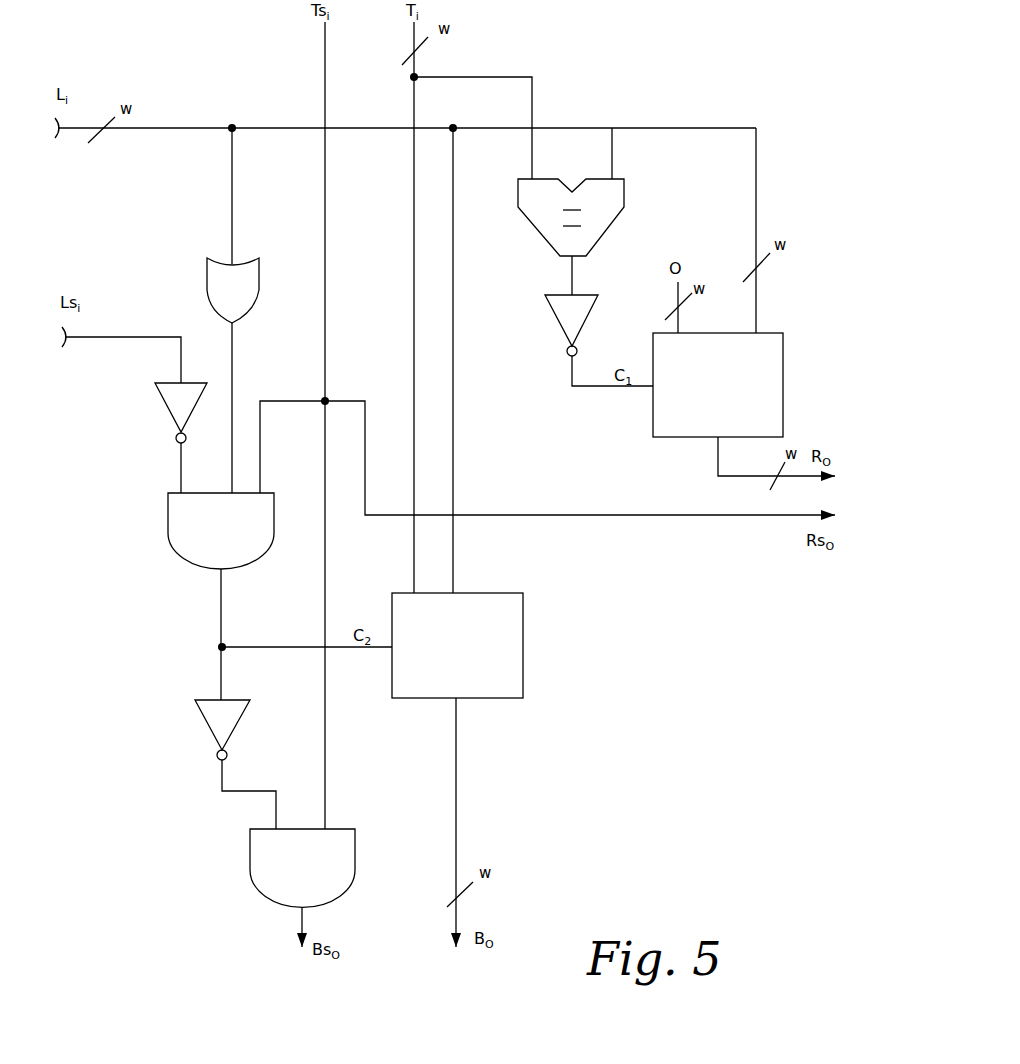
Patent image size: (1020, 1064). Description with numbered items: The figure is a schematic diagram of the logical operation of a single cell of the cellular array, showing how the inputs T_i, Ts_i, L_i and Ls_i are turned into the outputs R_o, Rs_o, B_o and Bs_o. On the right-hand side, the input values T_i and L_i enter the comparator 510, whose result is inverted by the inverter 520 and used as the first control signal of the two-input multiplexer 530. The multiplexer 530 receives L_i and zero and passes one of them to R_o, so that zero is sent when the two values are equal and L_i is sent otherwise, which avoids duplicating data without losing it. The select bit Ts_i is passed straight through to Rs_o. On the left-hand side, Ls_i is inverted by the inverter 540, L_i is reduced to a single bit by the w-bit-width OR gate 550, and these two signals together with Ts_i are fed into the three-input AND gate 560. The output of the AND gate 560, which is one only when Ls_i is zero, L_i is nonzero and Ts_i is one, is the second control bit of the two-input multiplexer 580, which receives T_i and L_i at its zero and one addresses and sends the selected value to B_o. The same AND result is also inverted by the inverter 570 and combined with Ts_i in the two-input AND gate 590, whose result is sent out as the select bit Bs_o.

The comparator 510 is at (543, 236).
The inverter 520 is at (558, 320).
The 2-input multiplexer 530 is at (653, 425).
The inverter 540 is at (165, 407).
The w-bit-width OR gate 550 is at (245, 262).
The 3-input AND gate 560 is at (183, 553).
The inverter 570 is at (205, 730).
The 2-input multiplexer 580 is at (523, 640).
The 2-input AND gate 590 is at (357, 831).